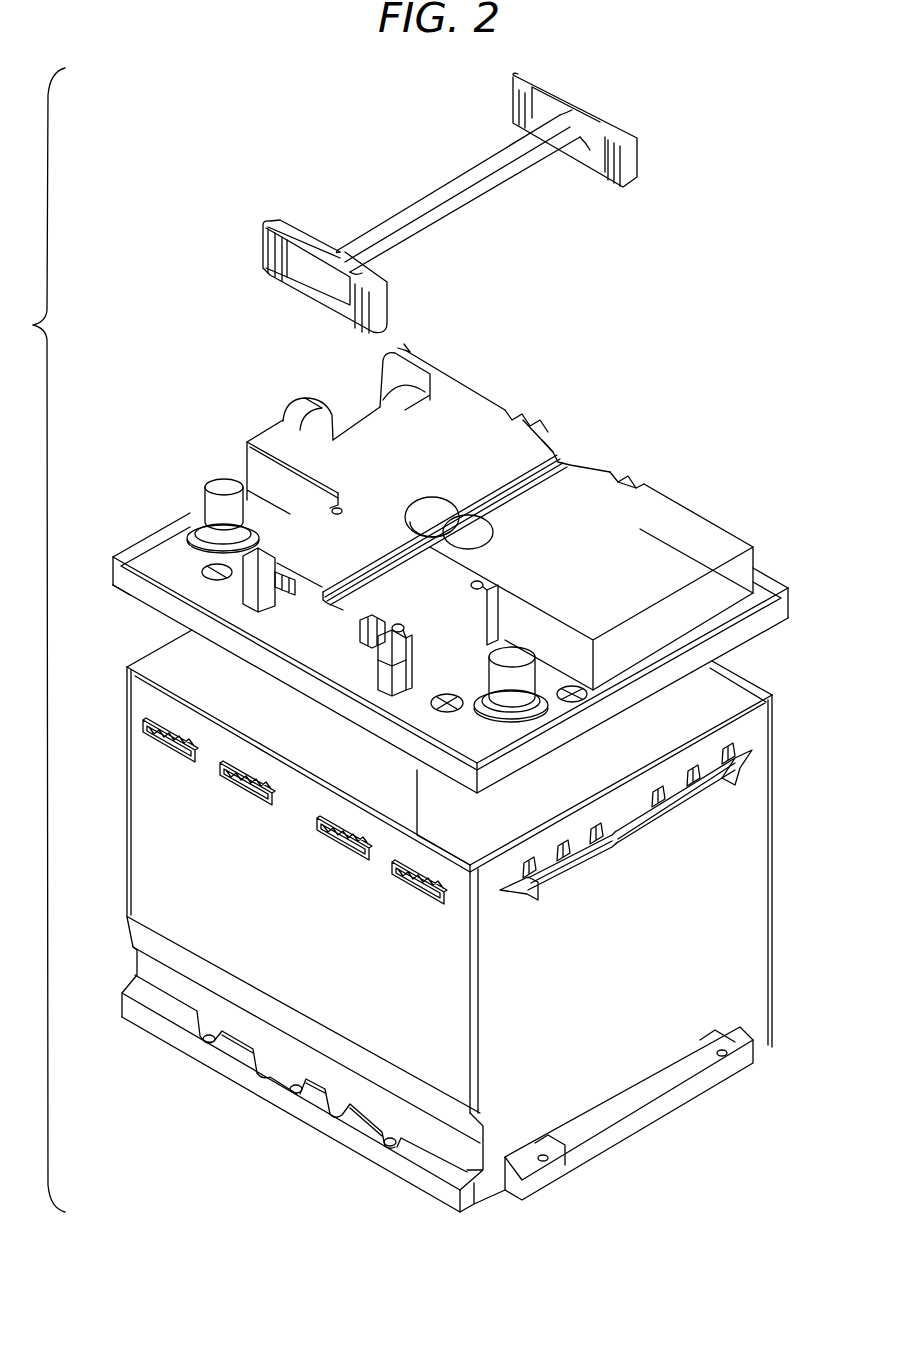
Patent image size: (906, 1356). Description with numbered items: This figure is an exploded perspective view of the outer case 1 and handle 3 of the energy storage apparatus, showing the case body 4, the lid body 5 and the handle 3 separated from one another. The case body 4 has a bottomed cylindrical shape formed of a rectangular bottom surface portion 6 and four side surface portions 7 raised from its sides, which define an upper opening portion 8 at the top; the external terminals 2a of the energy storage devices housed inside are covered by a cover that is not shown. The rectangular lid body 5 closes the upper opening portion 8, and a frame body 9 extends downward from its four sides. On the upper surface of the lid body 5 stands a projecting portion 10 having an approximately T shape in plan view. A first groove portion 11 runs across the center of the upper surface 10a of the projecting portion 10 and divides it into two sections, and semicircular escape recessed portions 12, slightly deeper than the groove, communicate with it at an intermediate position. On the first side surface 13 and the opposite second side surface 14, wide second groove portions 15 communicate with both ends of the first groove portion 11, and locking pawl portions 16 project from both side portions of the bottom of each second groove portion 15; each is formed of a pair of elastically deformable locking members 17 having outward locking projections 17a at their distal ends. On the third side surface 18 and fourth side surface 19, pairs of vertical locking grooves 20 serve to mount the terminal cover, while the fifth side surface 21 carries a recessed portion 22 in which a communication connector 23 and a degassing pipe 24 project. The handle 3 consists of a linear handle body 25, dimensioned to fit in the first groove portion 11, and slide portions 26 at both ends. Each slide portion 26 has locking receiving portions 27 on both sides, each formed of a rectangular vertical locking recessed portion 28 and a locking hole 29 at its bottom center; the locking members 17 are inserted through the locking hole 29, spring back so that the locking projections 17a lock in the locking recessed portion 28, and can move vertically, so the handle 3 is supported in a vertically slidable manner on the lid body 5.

The outer case 1 is at (705, 484).
The external terminals 2a is at (216, 488).
The handle 3 is at (650, 131).
The case body 4 is at (710, 1093).
The lid body 5 is at (172, 513).
The bottom surface portion 6 is at (250, 1095).
The side surface portions 7 is at (170, 853).
The upper opening portion 8 is at (720, 697).
The frame body 9 is at (135, 590).
The projecting portion 10 is at (653, 492).
The upper surface 10a is at (475, 395).
The first groove portion 11 is at (520, 445).
The escape recessed portions 12 is at (478, 536).
The first side surface 13 is at (245, 598).
The second side surface 14 is at (760, 545).
The second groove portions 15 is at (596, 443).
The locking pawl portions 16 is at (380, 620).
The locking members 17 is at (372, 648).
The locking projection 17a is at (333, 632).
The third side surface 18 is at (425, 660).
The fourth side surface 19 is at (185, 567).
The locking grooves 20 is at (483, 586).
The fifth side surface 21 is at (236, 468).
The recessed portion 22 is at (380, 380).
The communication connector 23 is at (405, 362).
The degassing pipe 24 is at (300, 412).
The handle body 25 is at (428, 190).
The slide portions 26 is at (278, 226).
The locking receiving portion 27 is at (380, 312).
The locking recessed portion 28 is at (283, 255).
The locking hole 29 is at (278, 273).